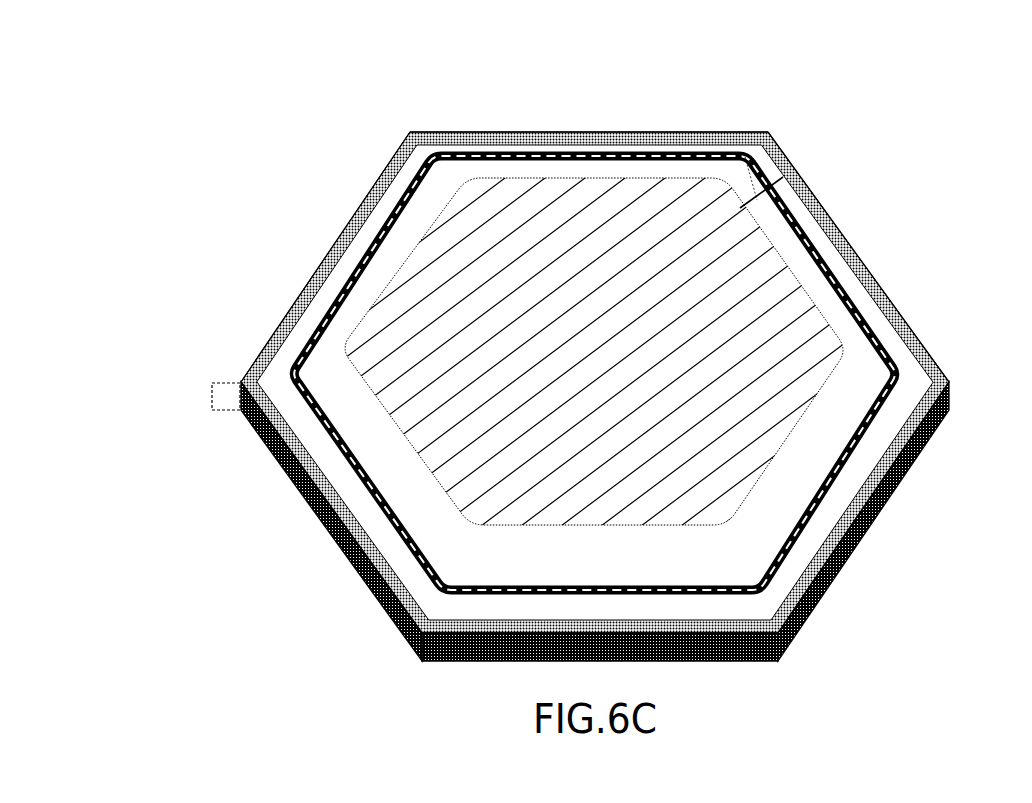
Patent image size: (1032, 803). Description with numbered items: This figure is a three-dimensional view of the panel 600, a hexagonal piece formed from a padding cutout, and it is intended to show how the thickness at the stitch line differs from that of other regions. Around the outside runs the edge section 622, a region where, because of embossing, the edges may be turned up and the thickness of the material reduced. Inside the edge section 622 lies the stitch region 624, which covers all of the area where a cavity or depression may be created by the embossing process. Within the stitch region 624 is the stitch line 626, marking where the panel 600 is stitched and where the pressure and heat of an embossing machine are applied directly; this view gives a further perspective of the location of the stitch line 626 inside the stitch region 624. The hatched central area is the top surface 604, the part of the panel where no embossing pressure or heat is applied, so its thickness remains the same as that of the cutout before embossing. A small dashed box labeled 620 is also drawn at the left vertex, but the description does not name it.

The panel 600 is at (305, 274).
The top surface 604 is at (787, 300).
The substrate 620 is at (212, 397).
The edge section 622 is at (808, 200).
The stitch region 624 is at (745, 157).
The stitch line 626 is at (871, 432).